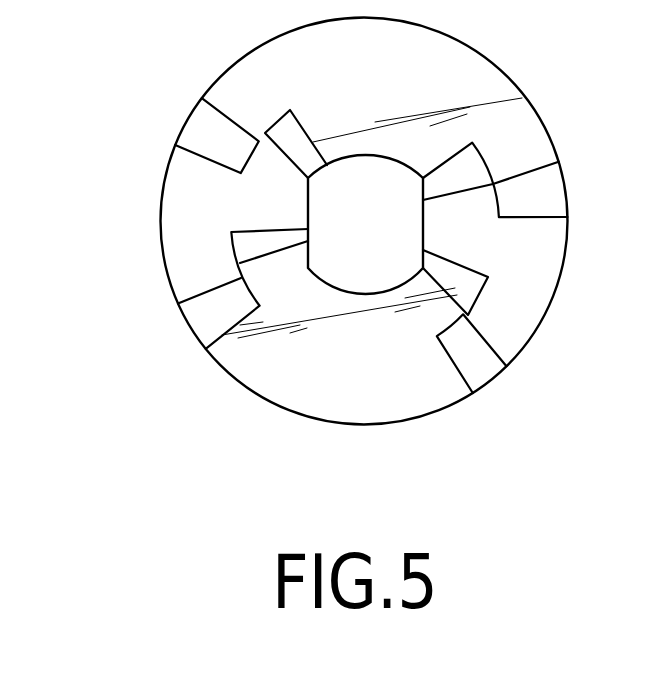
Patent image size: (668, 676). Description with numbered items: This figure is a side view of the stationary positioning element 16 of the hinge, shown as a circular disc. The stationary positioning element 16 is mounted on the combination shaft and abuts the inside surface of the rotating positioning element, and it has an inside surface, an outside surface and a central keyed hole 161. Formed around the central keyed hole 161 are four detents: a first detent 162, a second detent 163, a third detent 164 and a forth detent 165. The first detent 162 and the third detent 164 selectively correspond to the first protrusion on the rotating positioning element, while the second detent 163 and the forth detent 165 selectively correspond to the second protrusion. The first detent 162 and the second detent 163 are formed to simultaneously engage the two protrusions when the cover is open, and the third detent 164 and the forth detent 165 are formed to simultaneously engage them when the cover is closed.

The stationary positioning element 16 is at (447, 60).
The central keyed hole 161 is at (393, 178).
The first detent 162 is at (188, 281).
The second detent 163 is at (458, 250).
The third detent 164 is at (553, 250).
The forth detent 165 is at (260, 162).